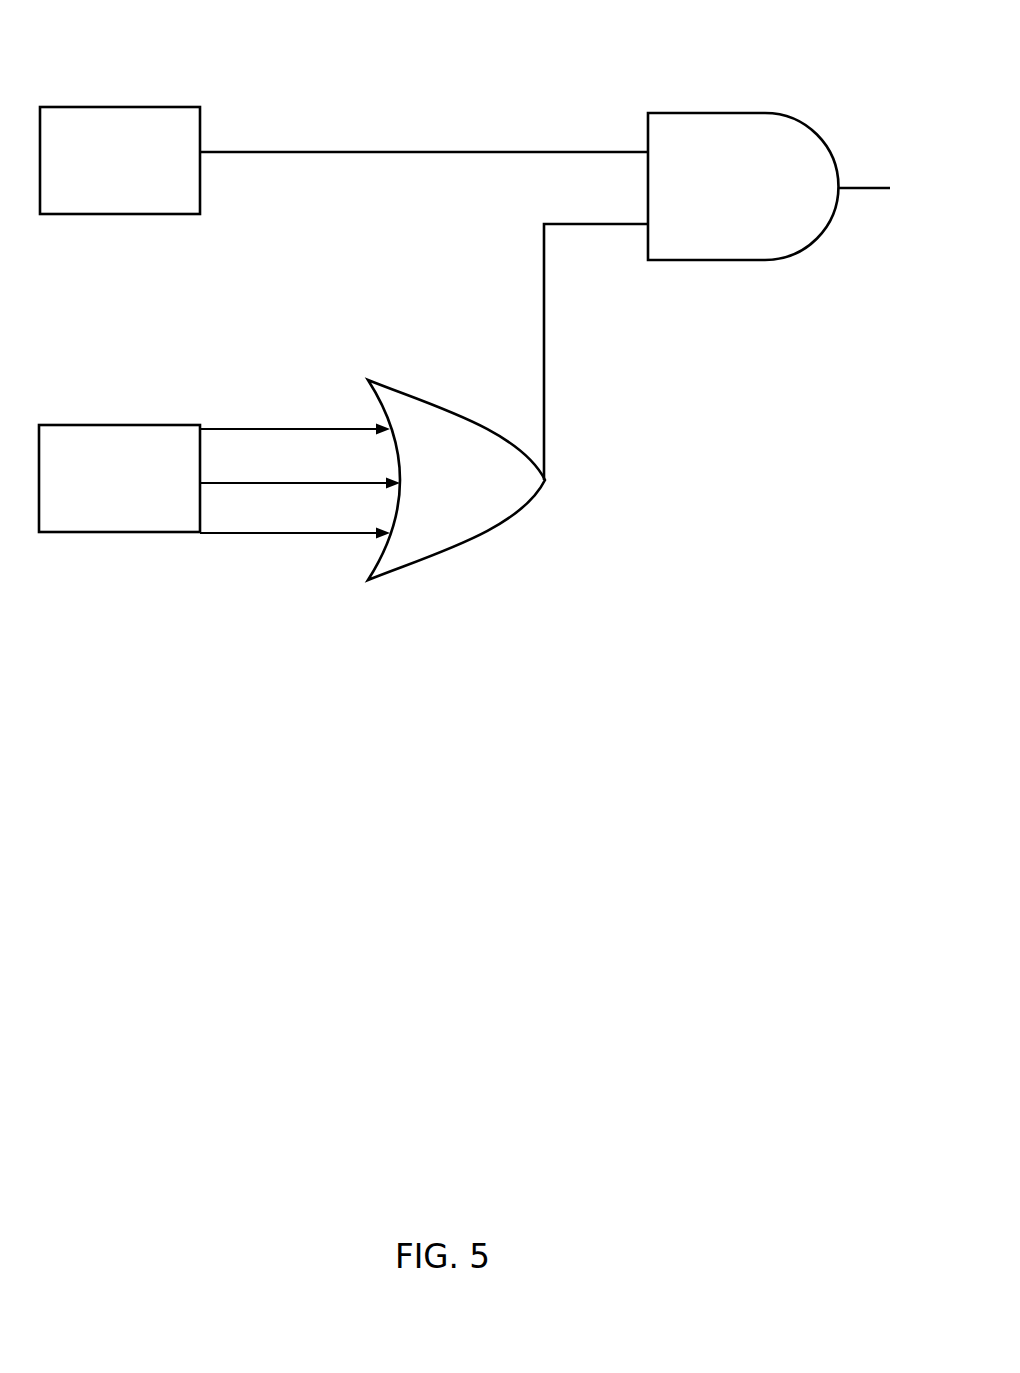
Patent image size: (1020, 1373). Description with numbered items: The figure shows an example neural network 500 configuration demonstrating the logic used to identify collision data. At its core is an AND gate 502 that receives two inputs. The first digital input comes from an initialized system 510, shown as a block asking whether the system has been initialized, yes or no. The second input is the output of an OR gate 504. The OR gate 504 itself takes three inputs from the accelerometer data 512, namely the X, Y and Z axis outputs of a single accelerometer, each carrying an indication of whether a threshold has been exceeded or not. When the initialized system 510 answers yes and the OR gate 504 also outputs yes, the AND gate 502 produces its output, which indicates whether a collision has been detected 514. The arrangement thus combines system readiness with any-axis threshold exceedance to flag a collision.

The neural network 500 is at (62, 32).
The AND gate 502 is at (743, 186).
The OR gate 504 is at (456, 480).
The initialized system 510 is at (120, 160).
The accelerometer data 512 is at (119, 478).
The collision detected 514 is at (888, 158).